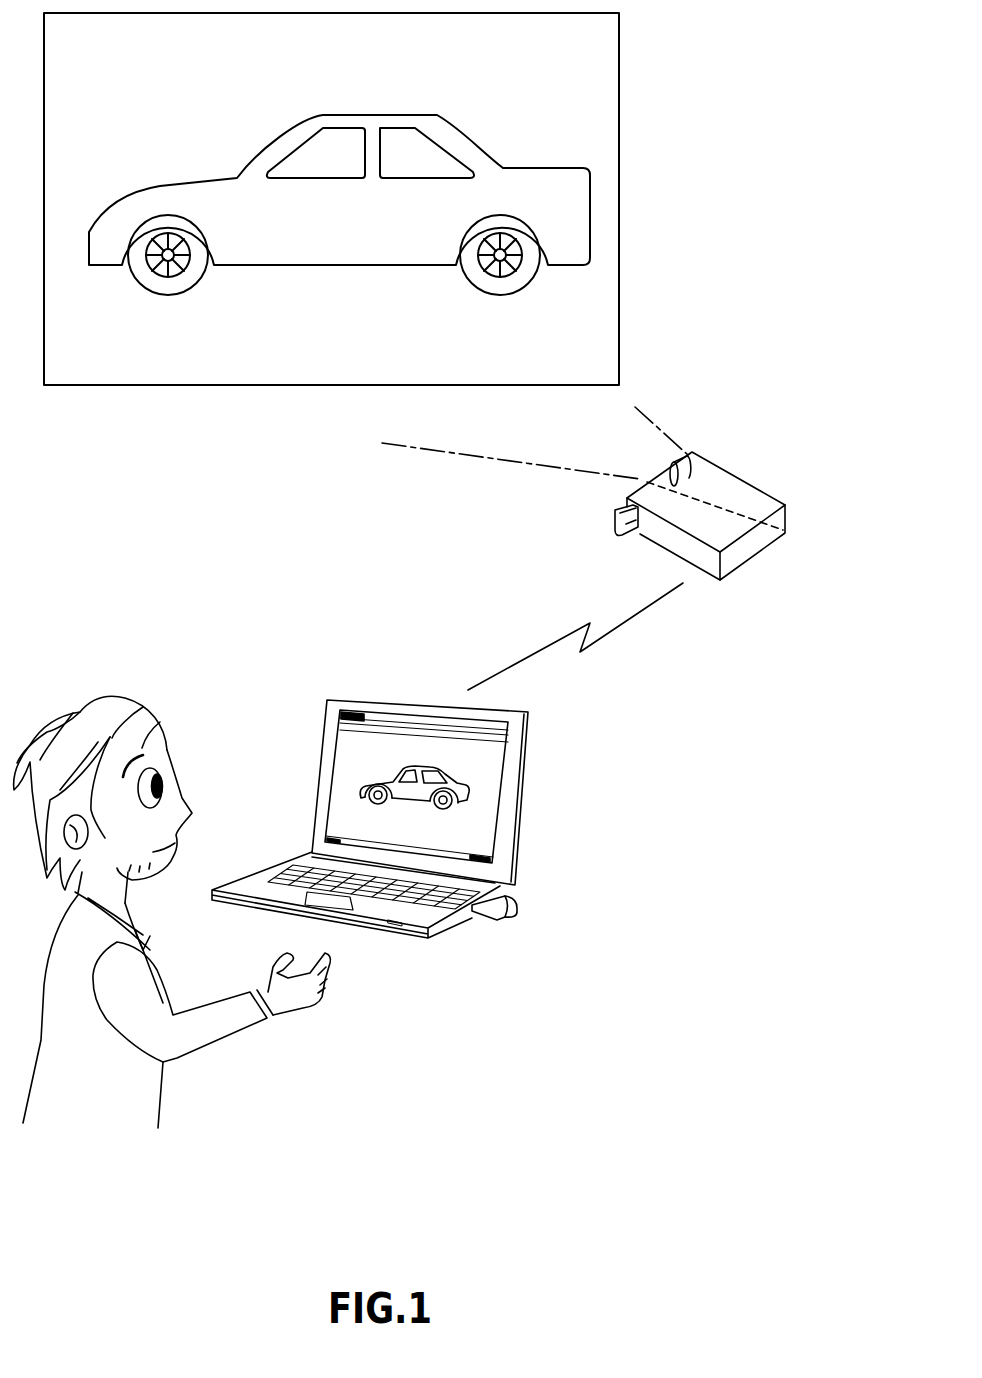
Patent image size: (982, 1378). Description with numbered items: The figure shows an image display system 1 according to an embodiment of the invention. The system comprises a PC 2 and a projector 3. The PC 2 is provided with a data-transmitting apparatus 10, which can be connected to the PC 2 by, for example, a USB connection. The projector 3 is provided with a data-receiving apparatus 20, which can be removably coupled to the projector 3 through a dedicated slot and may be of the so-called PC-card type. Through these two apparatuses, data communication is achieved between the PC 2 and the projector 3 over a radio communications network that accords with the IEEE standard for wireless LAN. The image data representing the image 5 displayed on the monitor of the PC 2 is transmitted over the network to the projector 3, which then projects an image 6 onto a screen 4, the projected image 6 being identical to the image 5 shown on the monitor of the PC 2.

The image display system 1 is at (666, 938).
The PC 2 is at (512, 747).
The projector 3 is at (708, 478).
The screen 4 is at (607, 55).
The image 5 is at (460, 795).
The image 6 is at (573, 209).
The data-transmitting apparatus 10 is at (517, 903).
The data-receiving apparatus 20 is at (615, 512).